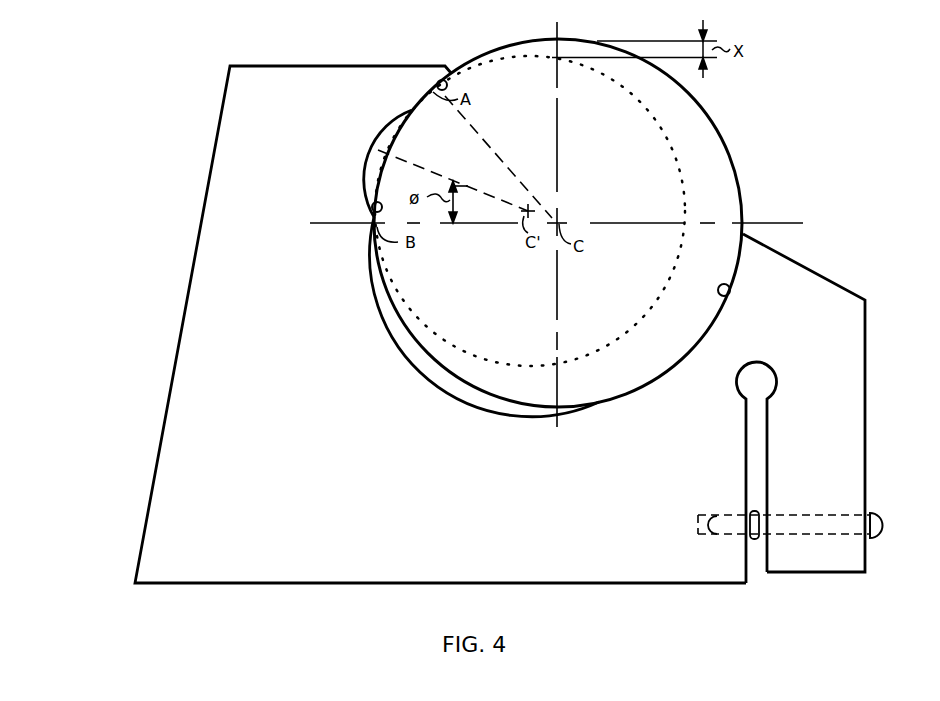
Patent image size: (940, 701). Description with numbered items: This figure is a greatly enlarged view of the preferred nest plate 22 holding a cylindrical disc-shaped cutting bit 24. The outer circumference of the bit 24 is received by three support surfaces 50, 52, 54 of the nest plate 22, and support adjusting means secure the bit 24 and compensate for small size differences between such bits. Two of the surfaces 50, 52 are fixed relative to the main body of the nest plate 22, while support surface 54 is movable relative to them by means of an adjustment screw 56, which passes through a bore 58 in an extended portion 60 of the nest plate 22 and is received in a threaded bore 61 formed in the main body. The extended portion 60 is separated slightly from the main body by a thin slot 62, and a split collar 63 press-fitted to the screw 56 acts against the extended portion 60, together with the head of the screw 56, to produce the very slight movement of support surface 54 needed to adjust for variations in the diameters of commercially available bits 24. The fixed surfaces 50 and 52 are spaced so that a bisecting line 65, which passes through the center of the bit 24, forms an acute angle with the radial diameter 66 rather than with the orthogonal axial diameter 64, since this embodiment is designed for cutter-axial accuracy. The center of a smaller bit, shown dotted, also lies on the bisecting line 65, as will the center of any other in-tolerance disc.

The nest plate 22 is at (350, 513).
The disc-shaped bit 24 is at (720, 206).
The support surface 50 is at (437, 83).
The support surface 52 is at (372, 206).
The support surface 54 is at (731, 289).
The adjustment screw 56 is at (880, 518).
The bore 58 is at (809, 521).
The extended portion 60 is at (835, 428).
The threaded bore 61 is at (702, 537).
The thin slot 62 is at (755, 565).
The split collar 63 is at (757, 505).
The axial diameter 64 is at (561, 23).
The bisecting line 65 is at (436, 177).
The radial diameter 66 is at (803, 224).